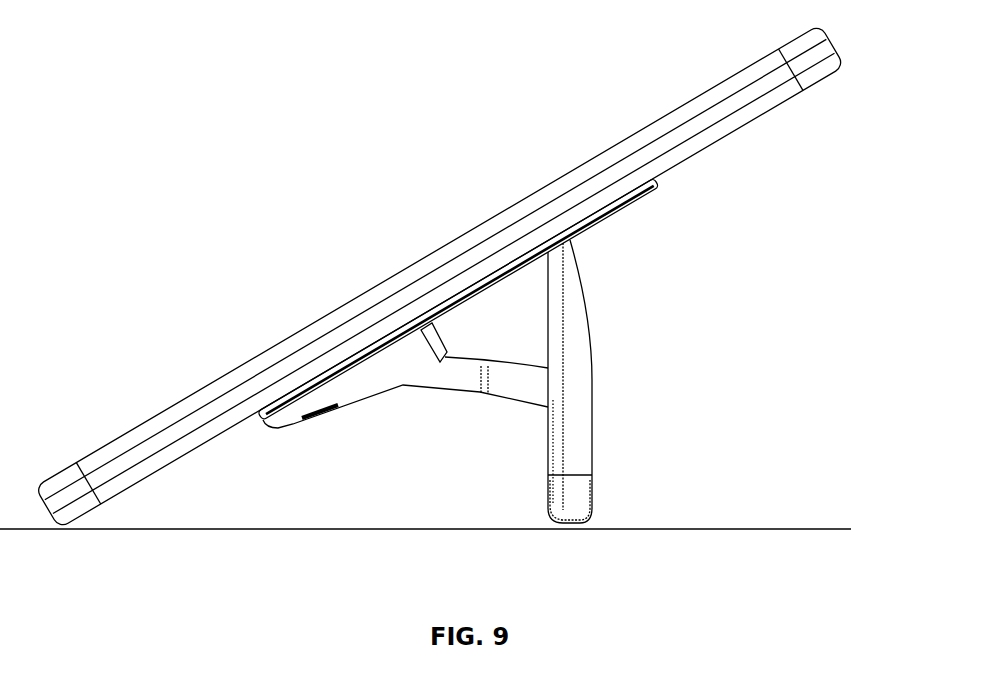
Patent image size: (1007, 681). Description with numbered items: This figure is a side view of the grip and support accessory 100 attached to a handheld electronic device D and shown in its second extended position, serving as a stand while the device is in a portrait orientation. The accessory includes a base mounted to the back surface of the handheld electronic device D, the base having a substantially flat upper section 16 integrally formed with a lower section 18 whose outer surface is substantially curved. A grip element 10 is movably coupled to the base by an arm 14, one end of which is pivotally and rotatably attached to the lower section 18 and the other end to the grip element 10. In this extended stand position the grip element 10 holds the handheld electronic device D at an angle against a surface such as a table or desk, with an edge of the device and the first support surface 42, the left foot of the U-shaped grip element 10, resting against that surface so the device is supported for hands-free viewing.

The handheld electronic device D is at (745, 100).
The grip and support accessory 100 is at (550, 350).
The upper section 16 is at (612, 224).
The grip element 10 is at (602, 421).
The first support surface 42 is at (597, 516).
The lower section 18 is at (371, 399).
The arm 14 is at (494, 403).